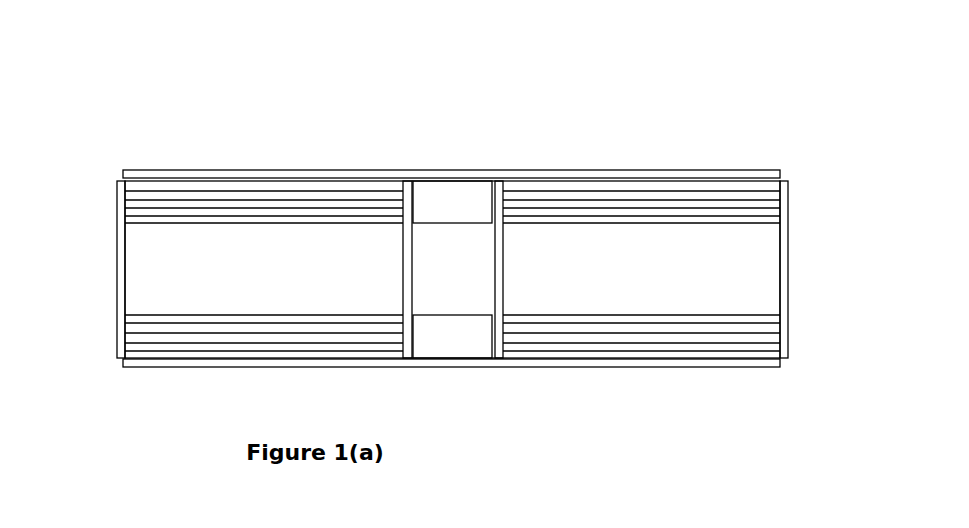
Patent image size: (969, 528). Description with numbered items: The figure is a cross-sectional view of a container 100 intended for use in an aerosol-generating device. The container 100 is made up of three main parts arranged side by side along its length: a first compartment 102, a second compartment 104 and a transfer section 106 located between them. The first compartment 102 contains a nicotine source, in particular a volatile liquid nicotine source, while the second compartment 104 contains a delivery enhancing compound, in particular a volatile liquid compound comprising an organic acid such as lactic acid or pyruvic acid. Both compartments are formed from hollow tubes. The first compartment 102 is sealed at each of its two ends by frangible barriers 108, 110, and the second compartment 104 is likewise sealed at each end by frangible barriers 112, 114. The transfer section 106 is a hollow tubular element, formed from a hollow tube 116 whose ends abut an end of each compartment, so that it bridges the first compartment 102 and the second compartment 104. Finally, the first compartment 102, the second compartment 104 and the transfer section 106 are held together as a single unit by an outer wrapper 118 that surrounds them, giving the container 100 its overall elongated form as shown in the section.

The container 100 is at (383, 115).
The first compartment 102 is at (195, 295).
The second compartment 104 is at (718, 295).
The transfer section 106 is at (461, 243).
The frangible barrier 108 is at (122, 278).
The frangible barrier 110 is at (409, 262).
The frangible barrier 112 is at (500, 260).
The frangible barrier 114 is at (785, 262).
The hollow tube 116 is at (452, 350).
The outer wrapper 118 is at (230, 173).